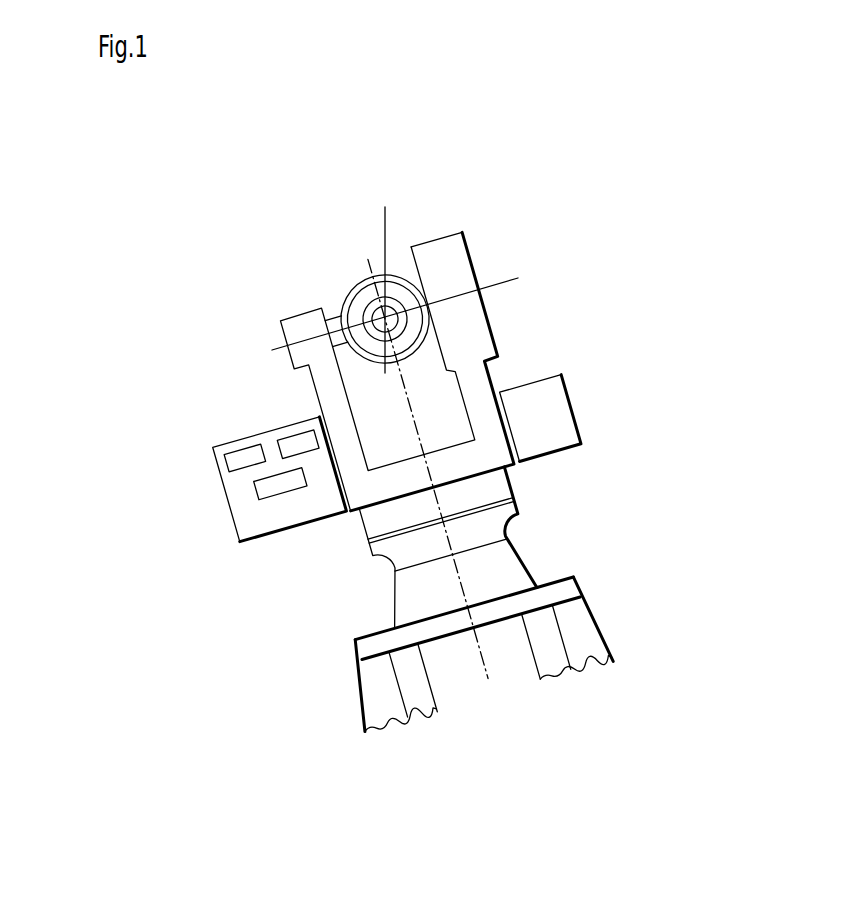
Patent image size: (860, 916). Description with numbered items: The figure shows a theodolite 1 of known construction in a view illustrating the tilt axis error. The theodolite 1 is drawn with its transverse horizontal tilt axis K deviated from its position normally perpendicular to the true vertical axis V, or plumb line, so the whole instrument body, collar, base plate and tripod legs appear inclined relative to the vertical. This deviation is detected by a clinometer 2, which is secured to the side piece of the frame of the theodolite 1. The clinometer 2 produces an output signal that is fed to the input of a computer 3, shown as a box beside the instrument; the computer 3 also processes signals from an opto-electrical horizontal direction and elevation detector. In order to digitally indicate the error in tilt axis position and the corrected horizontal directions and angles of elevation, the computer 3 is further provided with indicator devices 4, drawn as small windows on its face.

The theodolite 1 is at (482, 344).
The clinometer 2 is at (562, 418).
The computer 3 is at (238, 518).
The indicator devices 4 is at (285, 446).